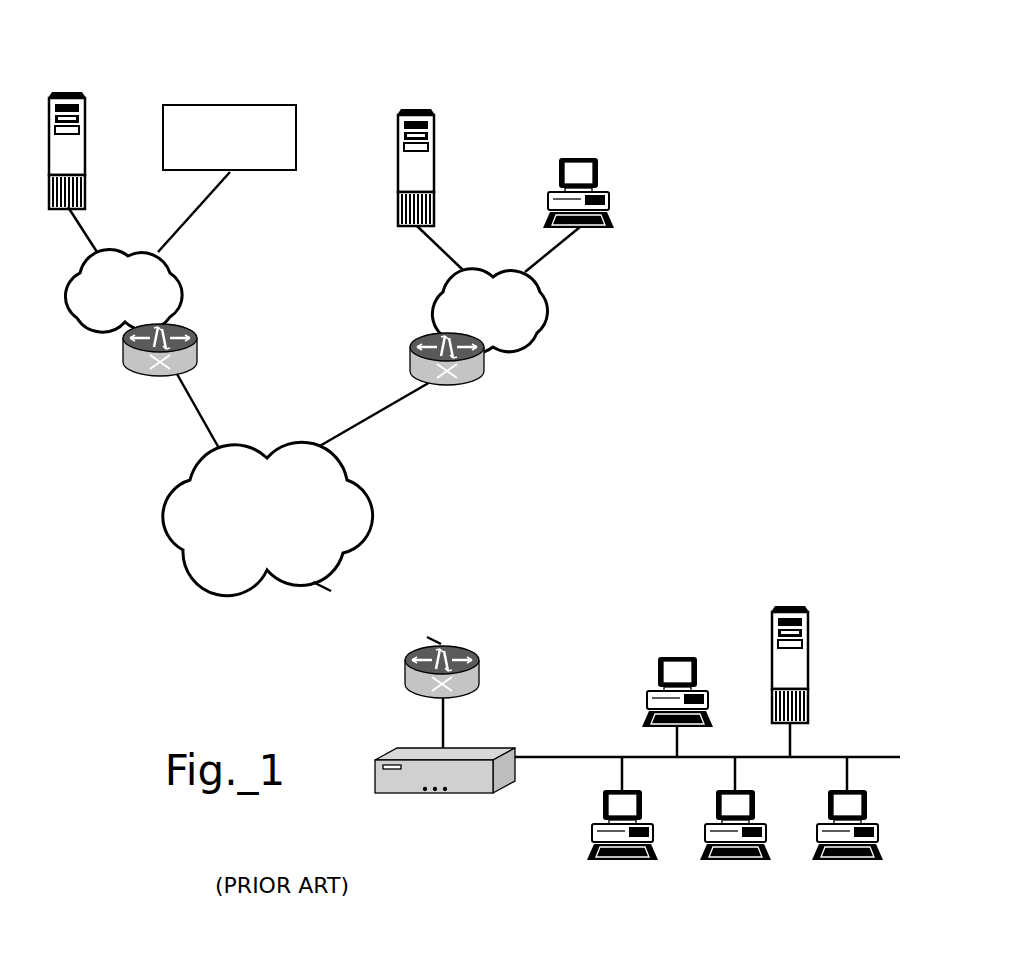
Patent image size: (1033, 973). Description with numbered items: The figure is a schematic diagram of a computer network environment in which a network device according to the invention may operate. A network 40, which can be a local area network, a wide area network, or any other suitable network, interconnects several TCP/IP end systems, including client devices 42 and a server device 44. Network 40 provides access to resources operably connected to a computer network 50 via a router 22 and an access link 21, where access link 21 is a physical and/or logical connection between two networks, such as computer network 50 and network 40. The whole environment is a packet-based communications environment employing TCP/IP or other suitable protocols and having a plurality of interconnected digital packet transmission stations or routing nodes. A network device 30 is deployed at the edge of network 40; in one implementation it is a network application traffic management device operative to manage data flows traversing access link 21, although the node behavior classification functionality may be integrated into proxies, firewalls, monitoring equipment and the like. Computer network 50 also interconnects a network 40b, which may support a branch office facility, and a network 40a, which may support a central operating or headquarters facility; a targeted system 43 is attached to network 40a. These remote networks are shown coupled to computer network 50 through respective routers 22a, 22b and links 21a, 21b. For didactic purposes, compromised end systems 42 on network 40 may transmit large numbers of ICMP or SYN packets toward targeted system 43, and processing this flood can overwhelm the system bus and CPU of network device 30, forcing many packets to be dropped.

The targeted system 43 is at (262, 104).
The network 40a is at (196, 291).
The first router 22a is at (199, 349).
The first link 21a is at (190, 397).
The network 40b is at (560, 311).
The second router 22b is at (466, 383).
The second link 21b is at (388, 406).
The computer network 50 is at (217, 585).
The access link 21 is at (360, 592).
The router 22 is at (480, 670).
The network device 30 is at (477, 794).
The network 40 is at (900, 757).
The server device 44 is at (798, 607).
The client devices 42 is at (668, 658).